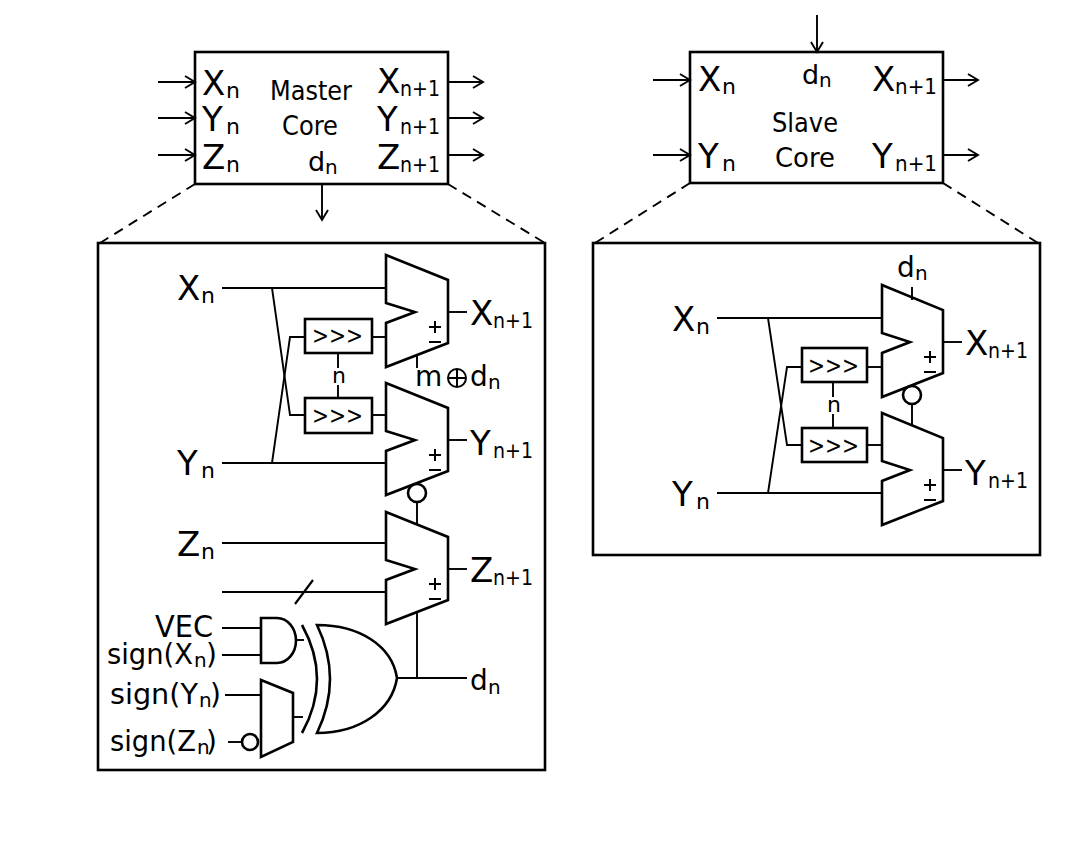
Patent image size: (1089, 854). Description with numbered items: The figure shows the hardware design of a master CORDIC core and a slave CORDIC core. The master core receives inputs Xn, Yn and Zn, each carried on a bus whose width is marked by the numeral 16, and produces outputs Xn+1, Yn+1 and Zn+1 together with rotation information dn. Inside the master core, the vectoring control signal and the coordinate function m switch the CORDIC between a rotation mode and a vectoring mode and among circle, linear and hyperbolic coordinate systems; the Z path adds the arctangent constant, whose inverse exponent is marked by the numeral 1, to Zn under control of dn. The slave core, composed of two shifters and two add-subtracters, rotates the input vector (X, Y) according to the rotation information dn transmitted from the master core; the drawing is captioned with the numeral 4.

The 16-bit data bus 16 is at (756, 306).
The arctangent constant input tan^-1(n) 1 is at (252, 578).
The figure caption FIG. 4 is at (674, 766).